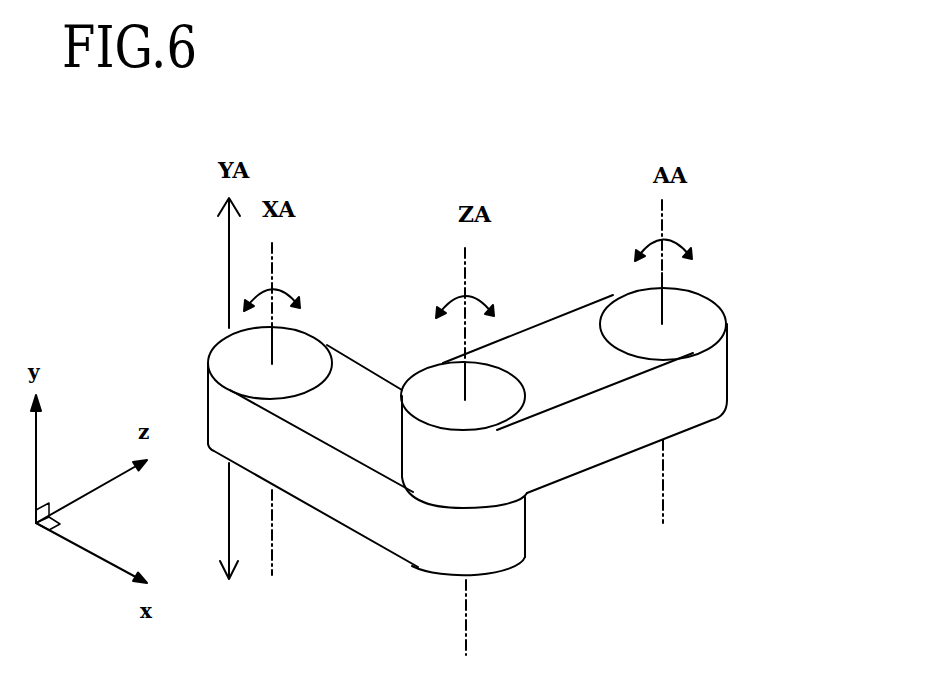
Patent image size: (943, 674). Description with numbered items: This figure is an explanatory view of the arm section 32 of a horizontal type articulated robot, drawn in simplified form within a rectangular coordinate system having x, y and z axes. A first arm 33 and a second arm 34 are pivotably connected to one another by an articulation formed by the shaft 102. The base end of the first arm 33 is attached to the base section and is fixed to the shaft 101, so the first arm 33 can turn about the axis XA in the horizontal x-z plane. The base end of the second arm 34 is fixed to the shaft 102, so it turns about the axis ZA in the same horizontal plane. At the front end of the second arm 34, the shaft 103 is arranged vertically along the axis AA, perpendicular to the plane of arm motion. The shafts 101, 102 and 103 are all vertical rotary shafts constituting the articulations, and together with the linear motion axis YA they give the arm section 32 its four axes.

The arm section 32 is at (743, 124).
The first arm 33 is at (372, 507).
The second arm 34 is at (595, 443).
The shaft 101 is at (248, 377).
The shaft 102 is at (457, 414).
The shaft 103 is at (693, 315).